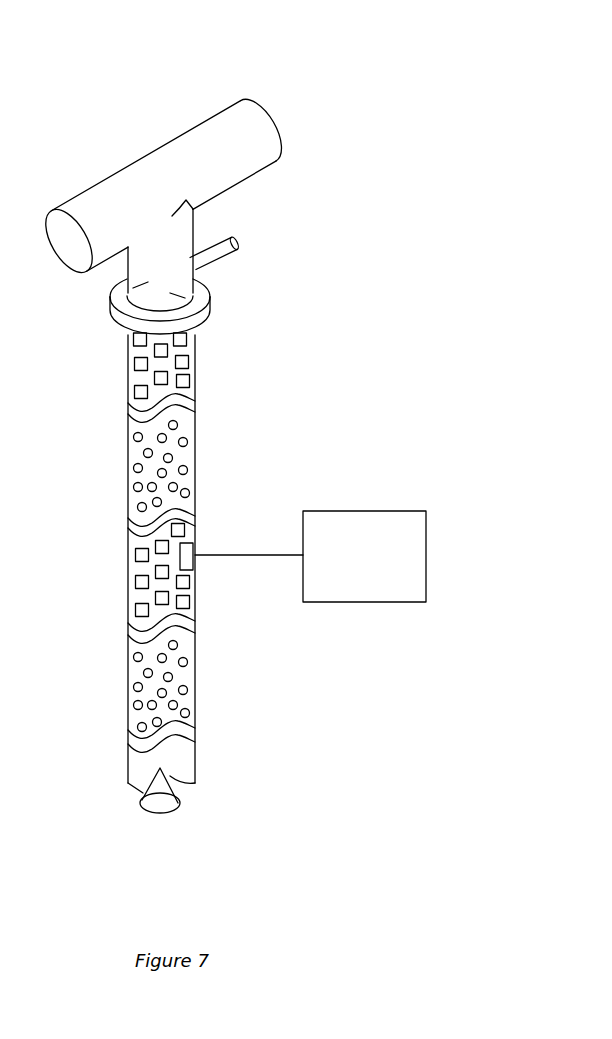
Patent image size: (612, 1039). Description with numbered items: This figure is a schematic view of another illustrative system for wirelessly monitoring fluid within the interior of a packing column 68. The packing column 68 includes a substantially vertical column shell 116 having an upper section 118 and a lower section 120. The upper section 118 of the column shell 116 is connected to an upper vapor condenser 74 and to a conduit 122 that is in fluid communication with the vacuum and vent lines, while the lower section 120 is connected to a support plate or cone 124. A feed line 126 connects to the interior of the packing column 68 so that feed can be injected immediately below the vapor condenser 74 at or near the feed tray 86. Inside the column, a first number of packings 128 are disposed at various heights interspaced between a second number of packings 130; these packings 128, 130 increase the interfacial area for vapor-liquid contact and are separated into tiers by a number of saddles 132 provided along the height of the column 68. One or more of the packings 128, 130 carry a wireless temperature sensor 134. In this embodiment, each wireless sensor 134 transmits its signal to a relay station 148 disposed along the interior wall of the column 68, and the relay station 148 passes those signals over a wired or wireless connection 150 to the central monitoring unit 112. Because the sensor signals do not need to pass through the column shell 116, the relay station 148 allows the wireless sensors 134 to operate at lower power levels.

The packing column 68 is at (180, 66).
The conduit 122 is at (152, 162).
The support plate or cone 124 is at (238, 240).
The upper vapor condenser 74 is at (110, 303).
The feed tray 86 is at (212, 303).
The upper section 118 is at (232, 347).
The column shell 116 is at (190, 457).
The first number of packings 128 is at (132, 388).
The second number of packings 130 is at (134, 467).
The saddles 132 is at (188, 402).
The wireless temperature sensor 134 is at (188, 692).
The relay station 148 is at (193, 561).
The wired or wireless connection 150 is at (263, 555).
The central monitoring unit 112 is at (408, 520).
The lower section 120 is at (247, 776).
The feed line 126 is at (170, 802).